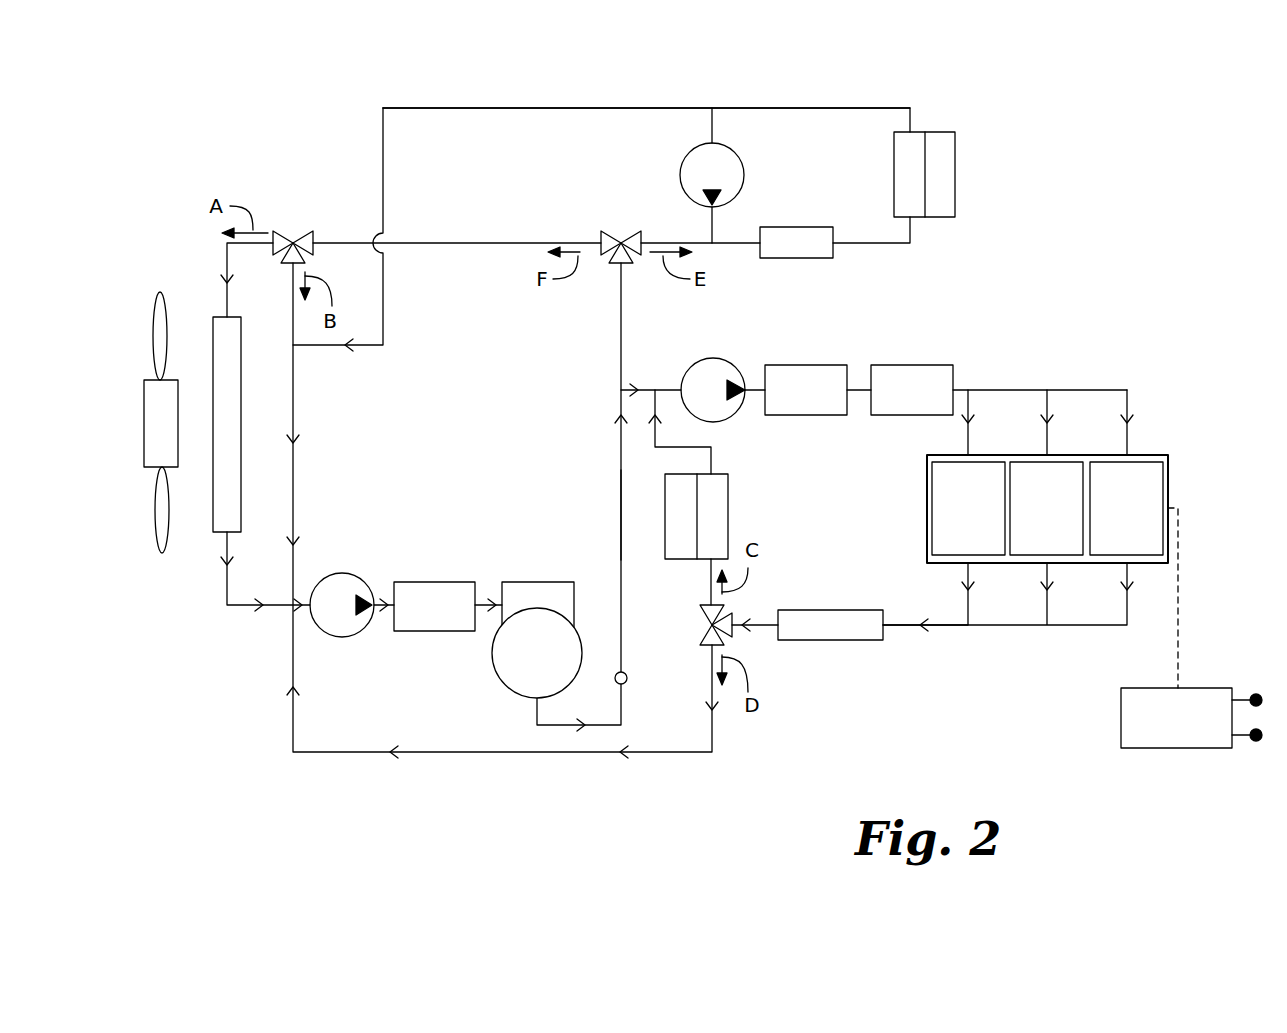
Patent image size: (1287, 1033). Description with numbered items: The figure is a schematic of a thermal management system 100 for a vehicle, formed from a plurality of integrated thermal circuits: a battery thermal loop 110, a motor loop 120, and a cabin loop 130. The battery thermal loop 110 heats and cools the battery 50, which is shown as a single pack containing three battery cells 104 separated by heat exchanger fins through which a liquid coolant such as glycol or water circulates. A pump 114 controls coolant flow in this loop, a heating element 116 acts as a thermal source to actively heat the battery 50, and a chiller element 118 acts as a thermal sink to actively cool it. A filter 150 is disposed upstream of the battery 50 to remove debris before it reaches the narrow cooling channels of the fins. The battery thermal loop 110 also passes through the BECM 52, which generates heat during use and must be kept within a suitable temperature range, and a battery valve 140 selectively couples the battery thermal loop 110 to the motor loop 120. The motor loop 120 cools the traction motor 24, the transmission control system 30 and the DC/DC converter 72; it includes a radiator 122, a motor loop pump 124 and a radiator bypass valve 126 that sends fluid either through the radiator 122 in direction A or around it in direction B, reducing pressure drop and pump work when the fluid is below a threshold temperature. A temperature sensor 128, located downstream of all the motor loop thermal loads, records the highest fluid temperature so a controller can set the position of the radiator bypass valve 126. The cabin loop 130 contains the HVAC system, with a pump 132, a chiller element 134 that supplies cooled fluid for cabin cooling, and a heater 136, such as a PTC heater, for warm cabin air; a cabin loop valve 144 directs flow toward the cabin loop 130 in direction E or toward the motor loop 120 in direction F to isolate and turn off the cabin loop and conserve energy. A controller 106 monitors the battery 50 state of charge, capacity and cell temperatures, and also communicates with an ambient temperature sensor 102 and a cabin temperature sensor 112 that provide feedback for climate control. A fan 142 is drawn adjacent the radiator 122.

The thermal management system 100 is at (258, 88).
The radiator bypass valve 126 is at (293, 231).
The cabin loop valve 144 is at (621, 231).
The cabin loop 130 is at (812, 108).
The pump 132 is at (745, 175).
The chiller element 134 is at (955, 172).
The heater 136 is at (797, 227).
The fan 142 is at (160, 292).
The radiator 122 is at (241, 424).
The motor loop pump 124 is at (337, 637).
The DC/DC converter 72 is at (435, 582).
The transmission control system 30 is at (537, 582).
The traction motor 24 is at (527, 678).
The temperature sensor 128 is at (650, 662).
The motor loop 120 is at (620, 530).
The pump 114 is at (700, 364).
The filter 150 is at (805, 365).
The heating element 116 is at (912, 365).
The chiller element 118 is at (728, 517).
The battery valve 140 is at (708, 605).
The BECM 52 is at (830, 610).
The battery 50 is at (1148, 455).
The battery cell 104 is at (954, 544).
The battery thermal loop 110 is at (952, 628).
The controller 106 is at (1150, 688).
The ambient temperature sensor 102 is at (1256, 694).
The cabin temperature sensor 112 is at (1256, 741).